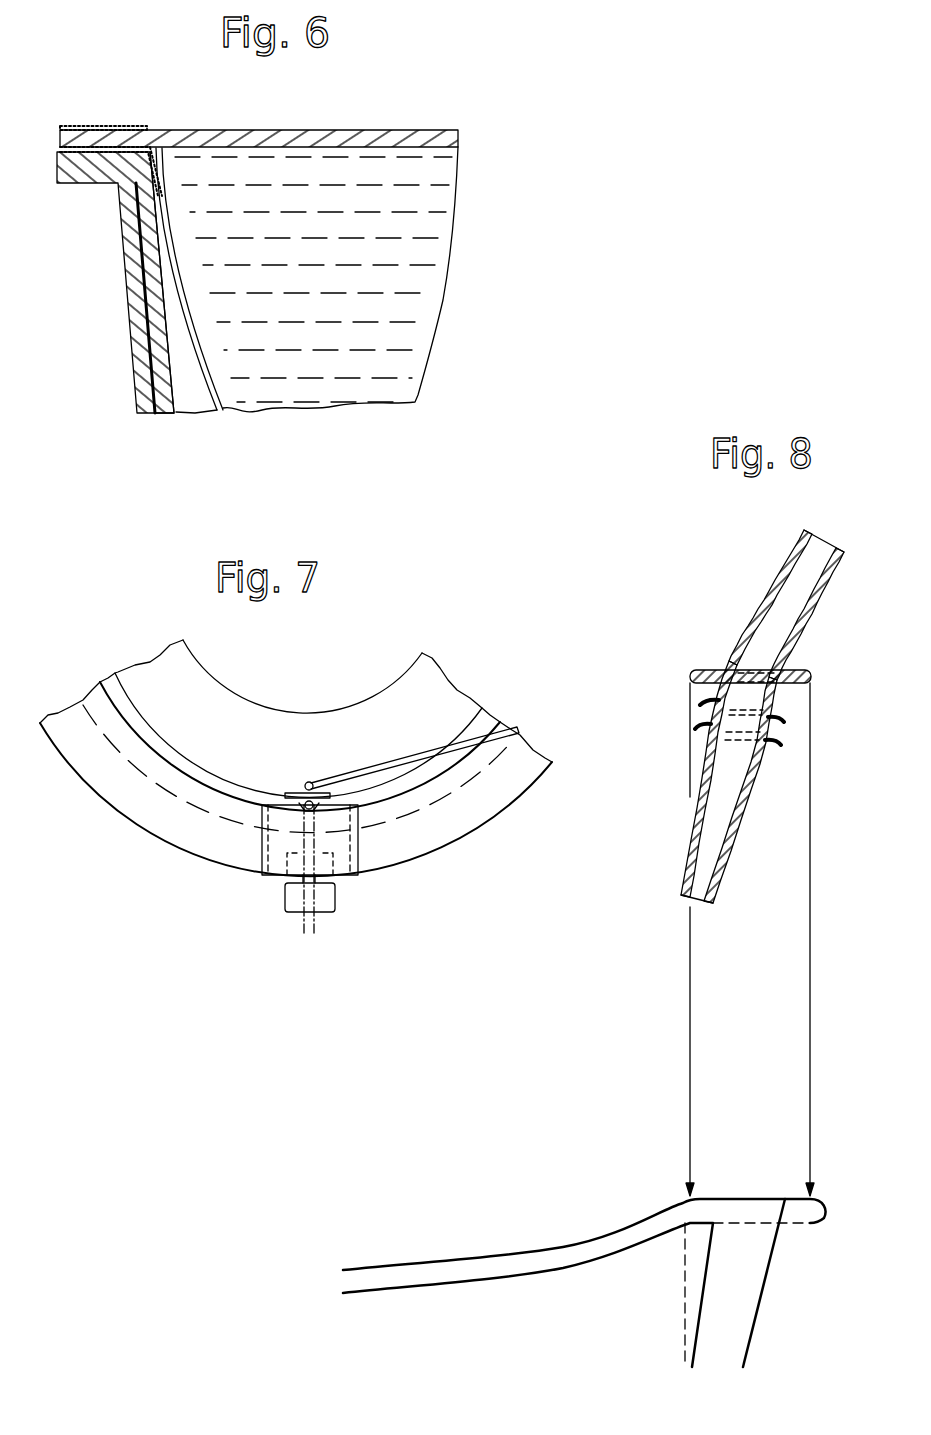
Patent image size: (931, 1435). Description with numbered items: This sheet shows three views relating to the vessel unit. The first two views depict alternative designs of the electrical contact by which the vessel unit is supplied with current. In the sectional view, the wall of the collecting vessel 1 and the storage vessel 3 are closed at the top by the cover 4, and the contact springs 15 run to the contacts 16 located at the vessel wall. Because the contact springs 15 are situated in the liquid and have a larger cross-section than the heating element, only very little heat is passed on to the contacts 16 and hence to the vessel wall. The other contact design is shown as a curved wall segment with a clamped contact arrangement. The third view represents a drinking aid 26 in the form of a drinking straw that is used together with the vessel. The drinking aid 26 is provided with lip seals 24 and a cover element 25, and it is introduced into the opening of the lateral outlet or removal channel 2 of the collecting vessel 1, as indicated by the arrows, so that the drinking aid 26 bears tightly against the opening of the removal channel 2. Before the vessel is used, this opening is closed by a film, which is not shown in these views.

In FIG. 6, the collecting vessel 1 is at (132, 298).
In FIG. 6, the storage vessel 3 is at (167, 343).
In FIG. 6, the cover 4 is at (390, 137).
In FIG. 6, the contact springs 15 is at (163, 232).
In FIG. 6, the contacts 16 is at (108, 125).
In FIG. 8, the outlet channel 2 is at (747, 1267).
In FIG. 8, the lip seals 24 is at (700, 728).
In FIG. 8, the cover element 25 is at (707, 670).
In FIG. 8, the drinking aid 26 is at (773, 573).